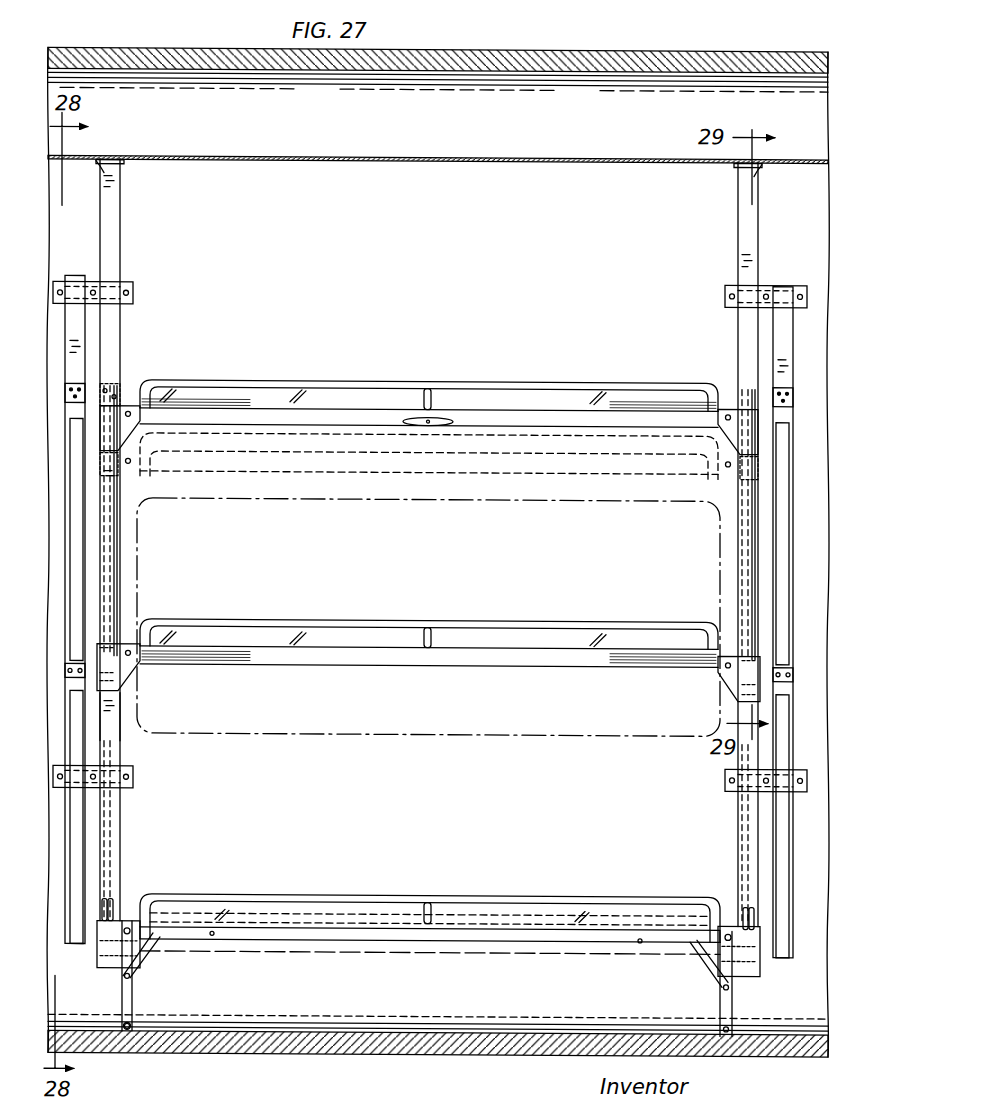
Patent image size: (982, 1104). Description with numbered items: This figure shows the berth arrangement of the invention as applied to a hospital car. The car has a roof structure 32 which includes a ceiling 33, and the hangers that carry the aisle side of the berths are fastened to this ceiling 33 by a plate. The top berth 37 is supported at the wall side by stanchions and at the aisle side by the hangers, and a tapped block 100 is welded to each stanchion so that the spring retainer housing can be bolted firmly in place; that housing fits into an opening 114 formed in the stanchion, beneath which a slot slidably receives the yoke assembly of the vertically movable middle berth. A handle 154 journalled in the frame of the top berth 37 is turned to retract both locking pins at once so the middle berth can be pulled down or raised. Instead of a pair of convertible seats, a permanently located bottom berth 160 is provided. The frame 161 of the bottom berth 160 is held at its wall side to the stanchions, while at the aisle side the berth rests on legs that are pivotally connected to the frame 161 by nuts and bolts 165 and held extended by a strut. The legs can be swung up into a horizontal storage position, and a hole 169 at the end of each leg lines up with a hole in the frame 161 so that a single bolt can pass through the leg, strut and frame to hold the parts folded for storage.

The roof structure 32 is at (432, 70).
The ceiling 33 is at (412, 160).
The top berth 37 is at (352, 402).
The tapped block 100 is at (80, 395).
The opening 114 is at (78, 433).
The handle 154 is at (440, 417).
The bottom berth 160 is at (527, 947).
The frame 161 is at (360, 933).
The nuts and bolts 165 is at (130, 928).
The hole 169 is at (140, 1025).